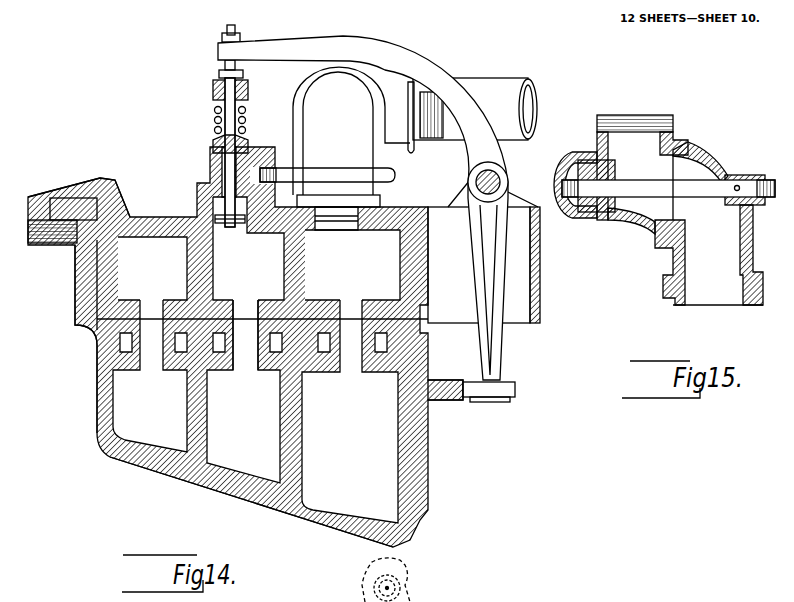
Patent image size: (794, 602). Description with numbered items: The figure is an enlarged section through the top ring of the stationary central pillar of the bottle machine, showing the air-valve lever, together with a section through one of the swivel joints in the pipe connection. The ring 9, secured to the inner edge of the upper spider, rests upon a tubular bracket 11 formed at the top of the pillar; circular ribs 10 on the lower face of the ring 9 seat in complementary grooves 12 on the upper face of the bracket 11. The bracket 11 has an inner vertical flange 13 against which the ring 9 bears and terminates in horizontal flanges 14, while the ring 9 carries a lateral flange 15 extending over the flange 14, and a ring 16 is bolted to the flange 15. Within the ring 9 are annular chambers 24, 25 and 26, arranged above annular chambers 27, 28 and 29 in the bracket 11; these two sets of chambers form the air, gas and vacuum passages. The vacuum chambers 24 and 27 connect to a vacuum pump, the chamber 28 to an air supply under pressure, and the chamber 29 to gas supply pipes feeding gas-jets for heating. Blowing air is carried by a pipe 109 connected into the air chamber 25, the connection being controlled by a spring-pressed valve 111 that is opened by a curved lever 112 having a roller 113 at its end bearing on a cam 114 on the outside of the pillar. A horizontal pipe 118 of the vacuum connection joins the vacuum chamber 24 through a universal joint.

The ring 9 is at (155, 218).
The circular ribs 10 is at (260, 345).
The tubular bracket 11 is at (108, 450).
The grooves 12 is at (103, 357).
The inner vertical flange 13 is at (77, 283).
The horizontal flanges 14 is at (67, 213).
The lateral flange 15 is at (107, 178).
The ring 16 is at (45, 245).
The vacuum chamber 24 is at (352, 265).
The air chamber 25 is at (248, 248).
The annular chamber 26 is at (152, 268).
The vacuum chamber 27 is at (350, 411).
The air chamber 28 is at (243, 391).
The gas chamber 29 is at (150, 376).
The pipe 109 is at (290, 168).
The spring-pressed valve 111 is at (209, 165).
The curved lever 112 is at (365, 42).
The roller 113 is at (517, 389).
The cam 114 is at (455, 400).
The horizontal pipe 118 is at (517, 117).